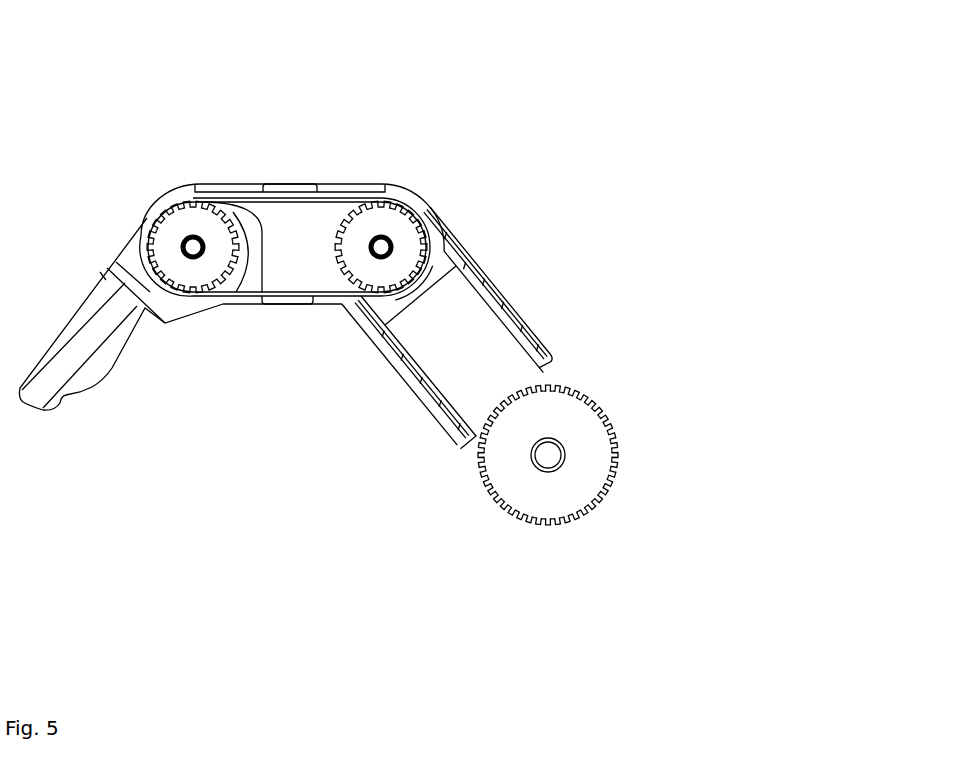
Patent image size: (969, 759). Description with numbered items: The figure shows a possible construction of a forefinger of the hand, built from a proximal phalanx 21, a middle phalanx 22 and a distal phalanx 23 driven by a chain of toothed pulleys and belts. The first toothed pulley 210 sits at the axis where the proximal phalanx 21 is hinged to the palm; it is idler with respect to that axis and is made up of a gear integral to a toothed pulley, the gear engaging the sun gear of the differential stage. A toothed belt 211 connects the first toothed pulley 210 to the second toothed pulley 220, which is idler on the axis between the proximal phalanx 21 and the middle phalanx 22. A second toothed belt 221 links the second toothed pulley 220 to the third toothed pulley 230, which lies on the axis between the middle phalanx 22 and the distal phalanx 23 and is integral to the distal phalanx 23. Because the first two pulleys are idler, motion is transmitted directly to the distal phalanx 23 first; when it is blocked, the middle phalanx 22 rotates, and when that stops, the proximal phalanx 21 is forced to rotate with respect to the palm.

The proximal phalanx 21 is at (496, 289).
The middle phalanx 22 is at (366, 184).
The distal phalanx 23 is at (192, 184).
The first toothed pulley 210 is at (567, 520).
The toothed belt 211 is at (458, 445).
The second toothed pulley 220 is at (352, 292).
The second toothed belt 221 is at (303, 305).
The third toothed pulley 230 is at (221, 291).